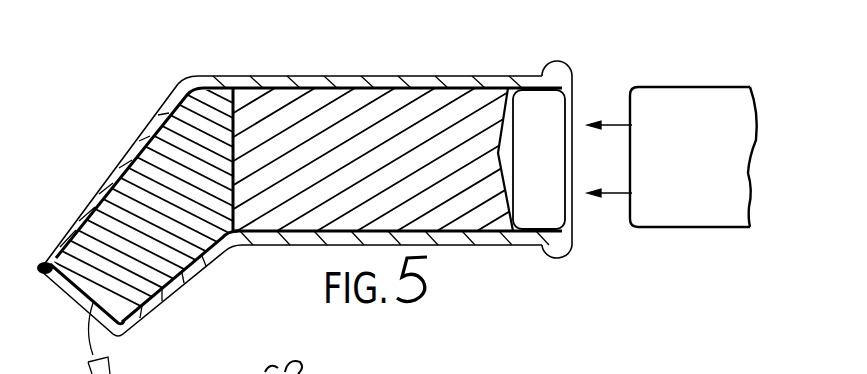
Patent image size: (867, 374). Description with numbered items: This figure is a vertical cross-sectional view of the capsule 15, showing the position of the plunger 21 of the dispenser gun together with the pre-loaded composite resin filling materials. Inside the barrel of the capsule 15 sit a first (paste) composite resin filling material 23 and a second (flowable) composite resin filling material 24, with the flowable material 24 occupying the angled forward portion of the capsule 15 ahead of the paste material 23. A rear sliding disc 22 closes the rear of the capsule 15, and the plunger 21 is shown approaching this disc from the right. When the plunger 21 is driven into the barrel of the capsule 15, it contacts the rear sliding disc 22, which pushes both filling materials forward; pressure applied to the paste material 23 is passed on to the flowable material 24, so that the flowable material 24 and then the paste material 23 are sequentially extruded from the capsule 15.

The capsule 15 is at (571, 240).
The plunger 21 is at (663, 207).
The rear sliding disc 22 is at (528, 102).
The first (paste) composite resin filling material 23 is at (279, 215).
The second (flowable) composite resin filling material 24 is at (160, 180).